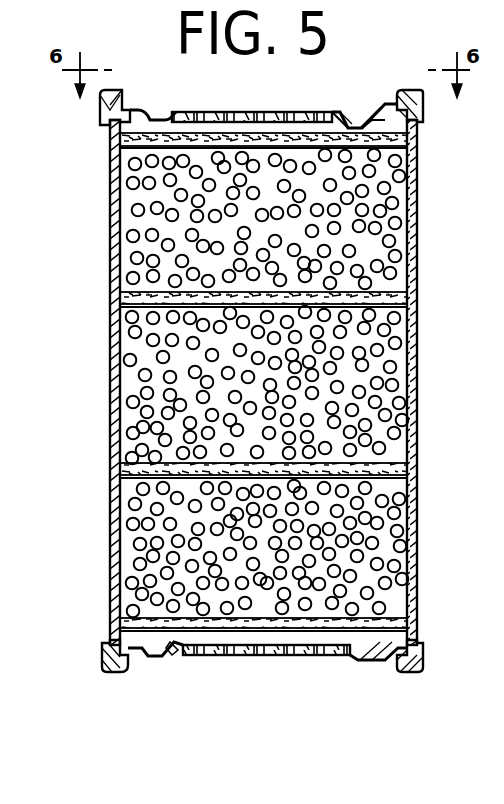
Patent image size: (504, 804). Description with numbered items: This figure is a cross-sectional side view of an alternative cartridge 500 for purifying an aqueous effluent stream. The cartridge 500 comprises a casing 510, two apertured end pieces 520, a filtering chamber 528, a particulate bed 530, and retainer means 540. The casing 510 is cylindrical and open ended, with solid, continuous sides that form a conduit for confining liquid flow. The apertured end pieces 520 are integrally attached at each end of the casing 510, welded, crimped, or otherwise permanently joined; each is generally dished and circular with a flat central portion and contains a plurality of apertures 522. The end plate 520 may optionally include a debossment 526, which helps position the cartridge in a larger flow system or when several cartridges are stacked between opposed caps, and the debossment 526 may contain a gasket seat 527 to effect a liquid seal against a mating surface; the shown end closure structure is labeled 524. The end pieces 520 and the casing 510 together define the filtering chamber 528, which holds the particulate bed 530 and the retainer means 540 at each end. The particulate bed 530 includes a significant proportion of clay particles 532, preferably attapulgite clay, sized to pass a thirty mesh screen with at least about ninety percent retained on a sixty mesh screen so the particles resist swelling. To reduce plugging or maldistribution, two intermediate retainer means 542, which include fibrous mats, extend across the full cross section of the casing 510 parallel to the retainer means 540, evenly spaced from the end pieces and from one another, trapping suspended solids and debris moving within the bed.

The cartridge 500 is at (110, 563).
The casing 510 is at (110, 278).
The apertured end piece 520 is at (186, 104).
The apertures 522 is at (242, 112).
The top closure assembly 524 is at (412, 76).
The debossment 526 is at (345, 122).
The gasket seat 527 is at (373, 118).
The filtering chamber 528 is at (374, 182).
The particulate bed 530 is at (362, 249).
The clay particles 532 is at (396, 267).
The retainer means 540 is at (132, 150).
The intermediate retainer means 542 is at (376, 316).